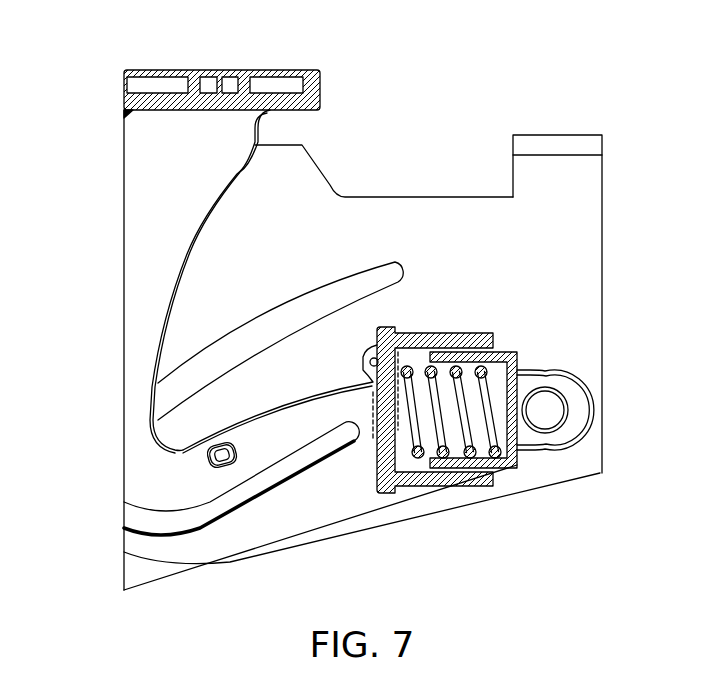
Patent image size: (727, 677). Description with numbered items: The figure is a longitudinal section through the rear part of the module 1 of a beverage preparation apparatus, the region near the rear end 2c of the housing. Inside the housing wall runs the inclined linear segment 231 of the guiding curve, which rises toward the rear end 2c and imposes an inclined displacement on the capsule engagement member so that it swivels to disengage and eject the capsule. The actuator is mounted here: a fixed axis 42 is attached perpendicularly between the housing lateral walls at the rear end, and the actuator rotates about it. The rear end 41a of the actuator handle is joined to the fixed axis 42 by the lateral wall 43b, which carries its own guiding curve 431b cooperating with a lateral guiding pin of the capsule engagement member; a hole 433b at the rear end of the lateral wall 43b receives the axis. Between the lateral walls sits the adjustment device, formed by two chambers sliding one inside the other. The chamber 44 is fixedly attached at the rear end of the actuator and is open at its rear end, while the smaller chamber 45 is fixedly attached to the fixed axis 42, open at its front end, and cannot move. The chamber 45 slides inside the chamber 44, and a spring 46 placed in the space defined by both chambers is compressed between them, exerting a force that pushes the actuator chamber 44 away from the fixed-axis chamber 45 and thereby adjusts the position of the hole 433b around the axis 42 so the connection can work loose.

The module 1 is at (496, 130).
The rear end of the housing 2c is at (583, 292).
The rear end of the actuator handle 41a is at (228, 78).
The inclined linear segment 231 is at (328, 300).
The guiding curve 431b is at (135, 515).
The lateral wall 43b is at (240, 540).
The chamber 44 is at (390, 490).
The chamber 45 is at (497, 470).
The spring 46 is at (460, 473).
The hole 433b is at (582, 413).
The fixed axis 42 is at (544, 413).